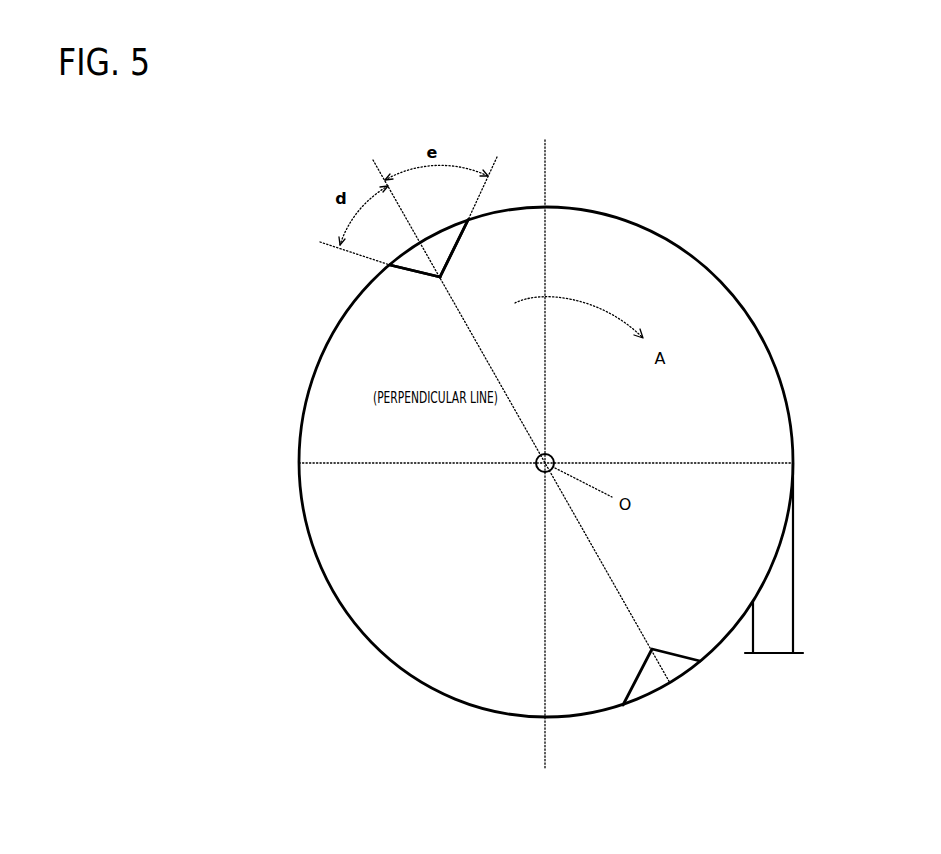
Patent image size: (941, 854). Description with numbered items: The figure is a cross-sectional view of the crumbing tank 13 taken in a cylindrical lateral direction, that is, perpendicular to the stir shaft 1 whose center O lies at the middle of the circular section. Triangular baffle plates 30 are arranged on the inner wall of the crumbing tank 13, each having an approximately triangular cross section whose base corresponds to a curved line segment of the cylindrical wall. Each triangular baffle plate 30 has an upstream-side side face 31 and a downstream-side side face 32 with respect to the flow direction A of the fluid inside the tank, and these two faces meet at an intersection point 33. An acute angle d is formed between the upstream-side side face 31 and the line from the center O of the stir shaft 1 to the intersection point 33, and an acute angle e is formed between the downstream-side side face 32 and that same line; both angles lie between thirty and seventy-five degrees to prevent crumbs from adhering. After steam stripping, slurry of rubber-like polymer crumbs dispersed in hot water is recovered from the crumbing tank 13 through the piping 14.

The stir shaft 1 is at (533, 477).
The crumbing tank 13 is at (740, 295).
The piping 14 is at (772, 617).
The triangular baffle plate 30 is at (440, 250).
The upstream-side side face 31 is at (440, 277).
The downstream-side side face 32 is at (455, 245).
The intersection point 33 is at (443, 277).